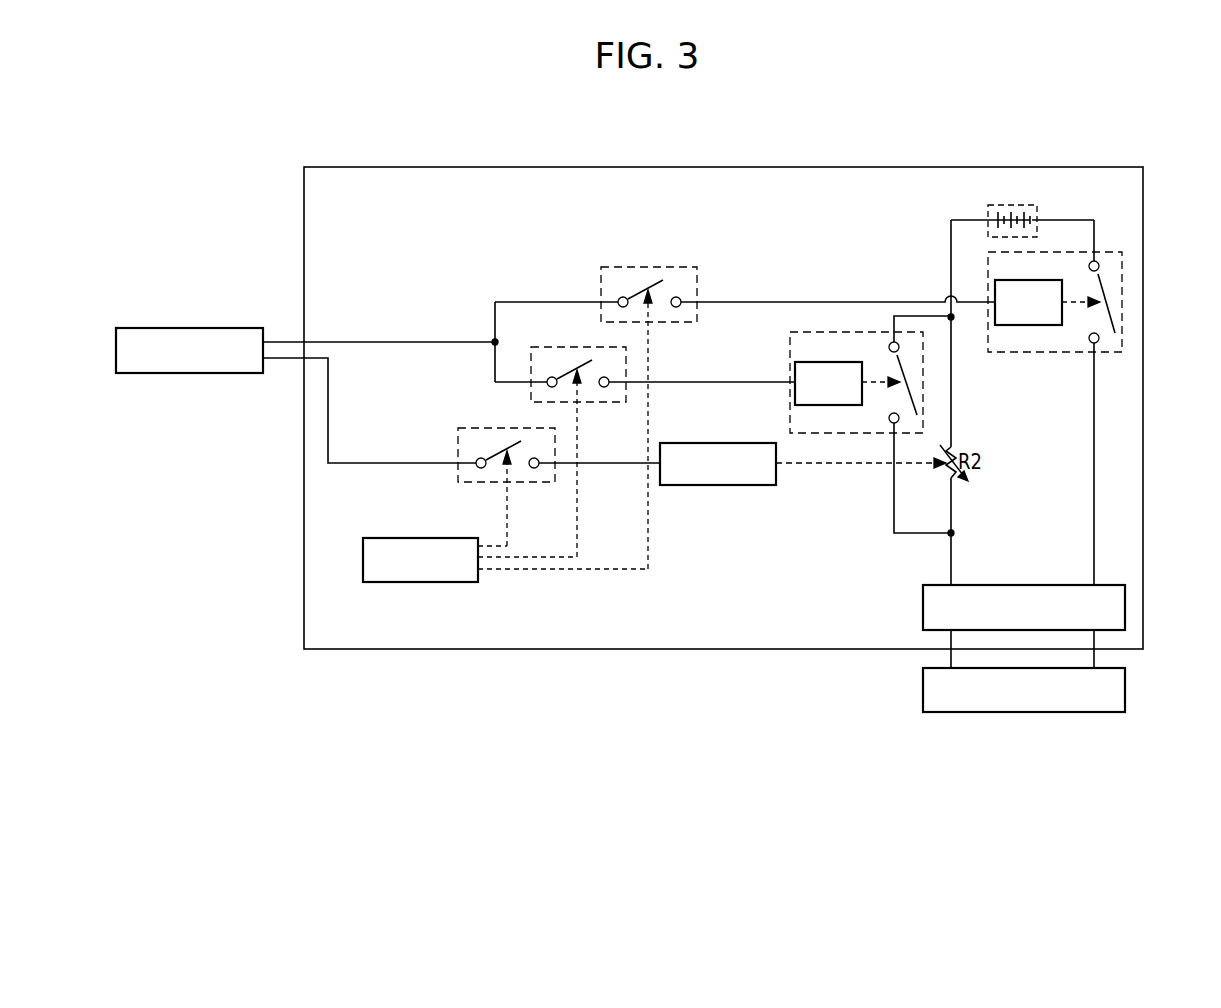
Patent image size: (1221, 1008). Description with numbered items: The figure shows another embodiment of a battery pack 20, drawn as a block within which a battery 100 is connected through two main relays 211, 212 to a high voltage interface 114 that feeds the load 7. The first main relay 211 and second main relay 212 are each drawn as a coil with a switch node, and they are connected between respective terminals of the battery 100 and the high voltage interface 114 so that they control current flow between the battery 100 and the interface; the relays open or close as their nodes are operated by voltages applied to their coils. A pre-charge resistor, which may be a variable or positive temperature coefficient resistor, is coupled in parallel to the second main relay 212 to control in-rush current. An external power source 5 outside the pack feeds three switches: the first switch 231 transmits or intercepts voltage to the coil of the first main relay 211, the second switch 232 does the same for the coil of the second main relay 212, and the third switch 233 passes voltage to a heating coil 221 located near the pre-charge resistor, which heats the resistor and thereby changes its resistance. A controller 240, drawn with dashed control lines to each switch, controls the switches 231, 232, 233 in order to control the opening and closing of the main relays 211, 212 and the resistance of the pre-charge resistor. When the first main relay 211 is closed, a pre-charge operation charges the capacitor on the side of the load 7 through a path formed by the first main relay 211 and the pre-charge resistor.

The external power source 5 is at (187, 327).
The battery pack 20 is at (722, 166).
The first switch 231 is at (649, 267).
The second switch 232 is at (609, 404).
The third switch 233 is at (540, 484).
The controller 240 is at (423, 585).
The heating coil 221 is at (718, 487).
The second main relay 212 is at (790, 349).
The first main relay 211 is at (1058, 354).
The battery 100 is at (1037, 208).
The high voltage interface 114 is at (1125, 608).
The load 7 is at (1125, 690).